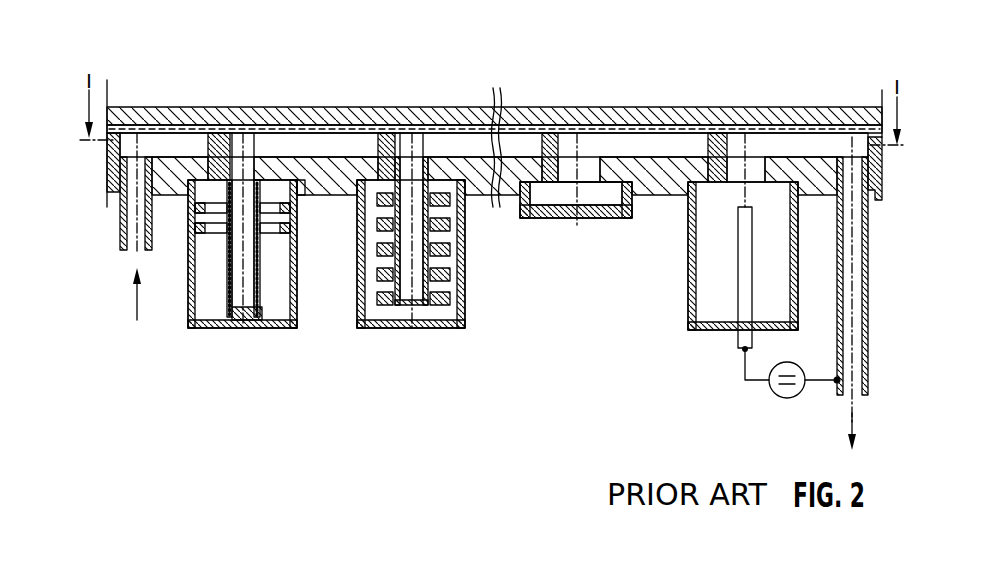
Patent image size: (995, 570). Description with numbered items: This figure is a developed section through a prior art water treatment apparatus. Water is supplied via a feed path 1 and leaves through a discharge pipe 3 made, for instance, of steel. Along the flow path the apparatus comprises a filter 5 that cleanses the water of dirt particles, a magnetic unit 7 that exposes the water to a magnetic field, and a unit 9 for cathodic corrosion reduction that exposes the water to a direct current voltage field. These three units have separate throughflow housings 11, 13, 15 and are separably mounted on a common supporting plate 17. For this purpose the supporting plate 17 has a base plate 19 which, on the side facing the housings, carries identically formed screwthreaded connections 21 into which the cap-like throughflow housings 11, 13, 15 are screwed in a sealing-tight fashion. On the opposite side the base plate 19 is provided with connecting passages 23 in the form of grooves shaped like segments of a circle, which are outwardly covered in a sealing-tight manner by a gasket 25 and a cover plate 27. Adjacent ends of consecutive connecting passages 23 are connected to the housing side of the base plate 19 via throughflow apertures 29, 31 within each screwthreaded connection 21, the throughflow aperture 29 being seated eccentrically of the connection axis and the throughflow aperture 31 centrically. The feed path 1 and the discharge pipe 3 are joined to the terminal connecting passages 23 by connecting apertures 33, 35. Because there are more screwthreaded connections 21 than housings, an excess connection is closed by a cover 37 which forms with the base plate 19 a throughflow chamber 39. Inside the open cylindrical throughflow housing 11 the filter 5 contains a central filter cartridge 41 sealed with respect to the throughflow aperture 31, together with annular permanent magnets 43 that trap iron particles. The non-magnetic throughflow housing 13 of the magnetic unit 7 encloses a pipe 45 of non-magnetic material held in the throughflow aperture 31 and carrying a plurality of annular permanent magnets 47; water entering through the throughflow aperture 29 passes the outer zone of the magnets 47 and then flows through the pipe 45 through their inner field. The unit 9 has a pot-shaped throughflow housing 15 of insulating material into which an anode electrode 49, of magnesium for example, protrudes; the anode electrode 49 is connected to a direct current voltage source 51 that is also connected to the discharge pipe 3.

The feed path 1 is at (119, 248).
The discharge pipe 3 is at (868, 288).
The filter 5 is at (253, 289).
The magnetic unit 7 is at (435, 225).
The unit for cathodic corrosion reduction 9 is at (742, 290).
The throughflow housing 11 is at (297, 308).
The throughflow housing 13 is at (465, 283).
The throughflow housing 15 is at (800, 272).
The supporting plate 17 is at (327, 98).
The base plate 19 is at (306, 185).
The screwthreaded connections 21 is at (181, 195).
The connecting passages 23 is at (150, 140).
The gasket 25 is at (367, 172).
The cover plate 27 is at (407, 168).
The throughflow aperture 29 is at (212, 166).
The throughflow aperture 31 is at (249, 163).
The connecting aperture 33 is at (117, 165).
The connecting aperture 35 is at (875, 195).
The cover 37 is at (569, 215).
The throughflow chamber 39 is at (598, 195).
The filter cartridge 41 is at (267, 298).
The annular permanent magnets 43 is at (292, 213).
The pipe 45 is at (428, 305).
The annular permanent magnets 47 is at (447, 224).
The anode electrode 49 is at (704, 279).
The direct current voltage source 51 is at (770, 394).